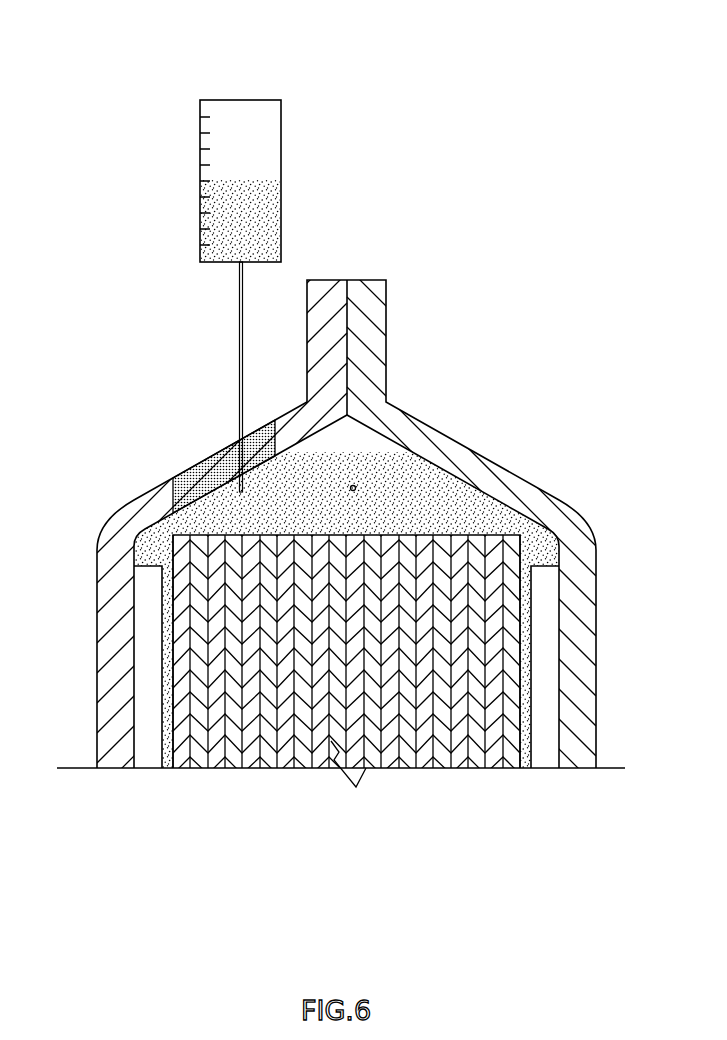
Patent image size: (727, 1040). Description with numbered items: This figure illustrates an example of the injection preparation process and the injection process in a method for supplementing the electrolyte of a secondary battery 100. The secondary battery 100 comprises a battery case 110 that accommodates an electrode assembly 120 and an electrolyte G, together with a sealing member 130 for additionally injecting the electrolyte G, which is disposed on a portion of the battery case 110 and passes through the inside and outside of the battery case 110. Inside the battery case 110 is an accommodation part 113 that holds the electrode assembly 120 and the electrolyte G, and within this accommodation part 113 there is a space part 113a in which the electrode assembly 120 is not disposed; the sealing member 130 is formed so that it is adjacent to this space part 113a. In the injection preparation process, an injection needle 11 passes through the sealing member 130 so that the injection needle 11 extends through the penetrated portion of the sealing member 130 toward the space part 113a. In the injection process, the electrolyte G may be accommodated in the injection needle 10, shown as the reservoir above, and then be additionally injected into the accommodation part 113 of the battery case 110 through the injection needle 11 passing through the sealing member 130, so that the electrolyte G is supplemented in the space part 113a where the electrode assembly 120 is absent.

The injection needle 10 is at (242, 91).
The injection needle 11 is at (237, 296).
The secondary battery 100 is at (571, 197).
The battery case 110 is at (512, 452).
The accommodation part 113 is at (406, 480).
The space part 113a is at (354, 486).
The electrode assembly 120 is at (275, 790).
The sealing member 130 is at (205, 475).
The electrolyte G is at (268, 216).